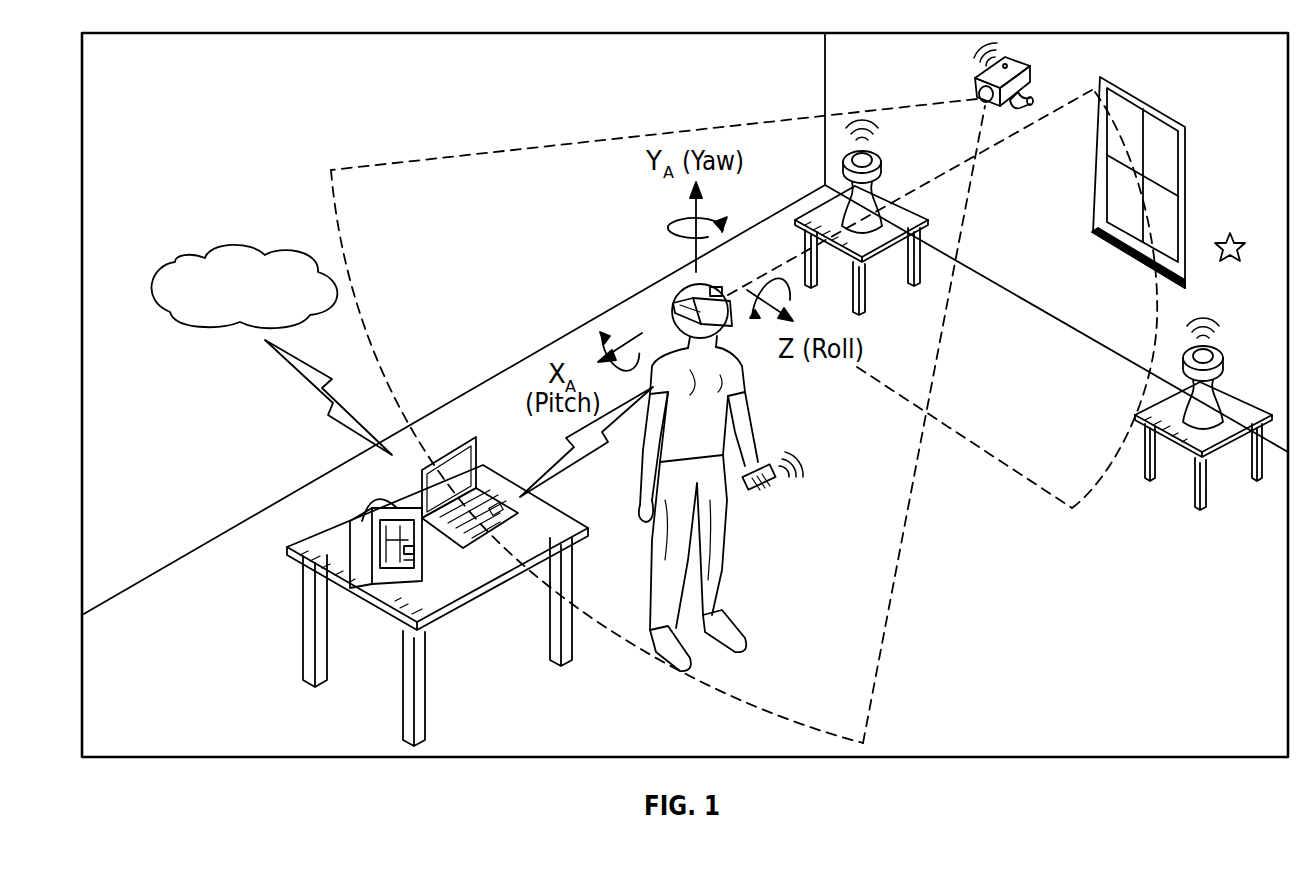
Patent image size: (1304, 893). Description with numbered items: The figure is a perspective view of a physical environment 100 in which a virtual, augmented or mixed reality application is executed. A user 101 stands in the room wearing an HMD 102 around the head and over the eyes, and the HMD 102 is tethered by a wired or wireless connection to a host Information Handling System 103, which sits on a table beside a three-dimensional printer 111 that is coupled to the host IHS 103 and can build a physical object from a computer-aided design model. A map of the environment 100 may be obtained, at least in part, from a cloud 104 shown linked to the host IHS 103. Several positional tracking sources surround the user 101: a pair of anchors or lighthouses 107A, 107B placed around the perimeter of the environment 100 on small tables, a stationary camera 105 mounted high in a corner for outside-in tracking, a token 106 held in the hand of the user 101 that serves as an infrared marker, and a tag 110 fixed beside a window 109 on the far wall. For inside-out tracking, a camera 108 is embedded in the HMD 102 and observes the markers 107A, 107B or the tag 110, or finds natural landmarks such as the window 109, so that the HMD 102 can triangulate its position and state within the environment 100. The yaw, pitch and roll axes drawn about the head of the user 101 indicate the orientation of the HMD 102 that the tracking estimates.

The environment 100 is at (300, 33).
The user 101 is at (725, 542).
The HMD 102 is at (686, 291).
The host Information Handling System 103 is at (415, 488).
The cloud 104 is at (176, 262).
The camera 105 is at (1032, 77).
The token 106 is at (774, 478).
The lighthouse 107A is at (882, 160).
The lighthouse 107B is at (1223, 362).
The camera 108 is at (716, 288).
The window 109 is at (1187, 148).
The tag 110 is at (1236, 242).
The 3D printer 111 is at (348, 547).